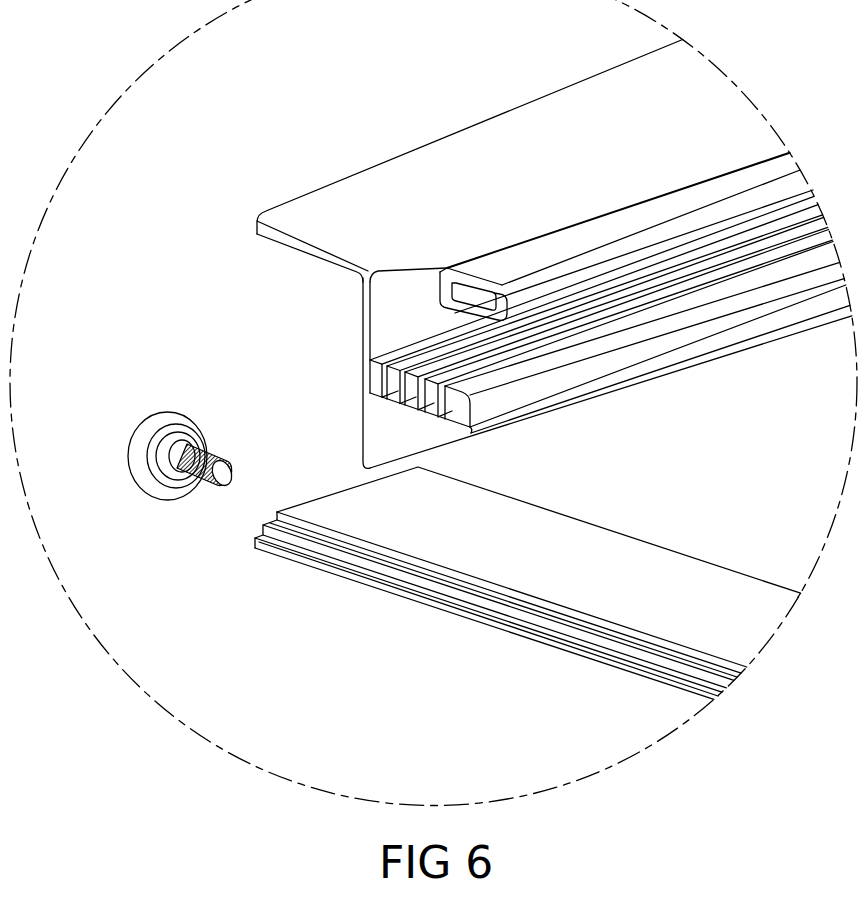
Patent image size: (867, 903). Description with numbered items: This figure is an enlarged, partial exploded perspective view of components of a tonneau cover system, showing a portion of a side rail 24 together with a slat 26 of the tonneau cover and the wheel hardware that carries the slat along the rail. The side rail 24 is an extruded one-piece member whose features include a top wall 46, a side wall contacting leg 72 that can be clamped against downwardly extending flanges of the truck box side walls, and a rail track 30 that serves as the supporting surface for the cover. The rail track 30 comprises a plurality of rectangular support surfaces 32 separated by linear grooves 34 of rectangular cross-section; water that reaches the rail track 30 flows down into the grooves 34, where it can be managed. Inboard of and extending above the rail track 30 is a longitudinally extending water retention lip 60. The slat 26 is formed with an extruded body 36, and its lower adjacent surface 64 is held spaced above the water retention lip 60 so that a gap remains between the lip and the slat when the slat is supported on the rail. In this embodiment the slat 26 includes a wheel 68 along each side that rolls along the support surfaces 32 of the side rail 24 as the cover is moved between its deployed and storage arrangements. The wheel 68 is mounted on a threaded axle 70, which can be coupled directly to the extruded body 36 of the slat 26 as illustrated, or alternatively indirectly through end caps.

The side rail 24 is at (540, 254).
The slat 26 is at (528, 583).
The rail track 30 is at (578, 306).
The support surface 32 is at (418, 357).
The groove 34 is at (420, 388).
The extruded body 36 is at (457, 522).
The top wall 46 is at (445, 284).
The water retention lip 60 is at (515, 380).
The lower adjacent surface 64 is at (483, 628).
The wheel 68 is at (153, 430).
The threaded axle 70 is at (208, 456).
The side wall contacting leg 72 is at (362, 448).